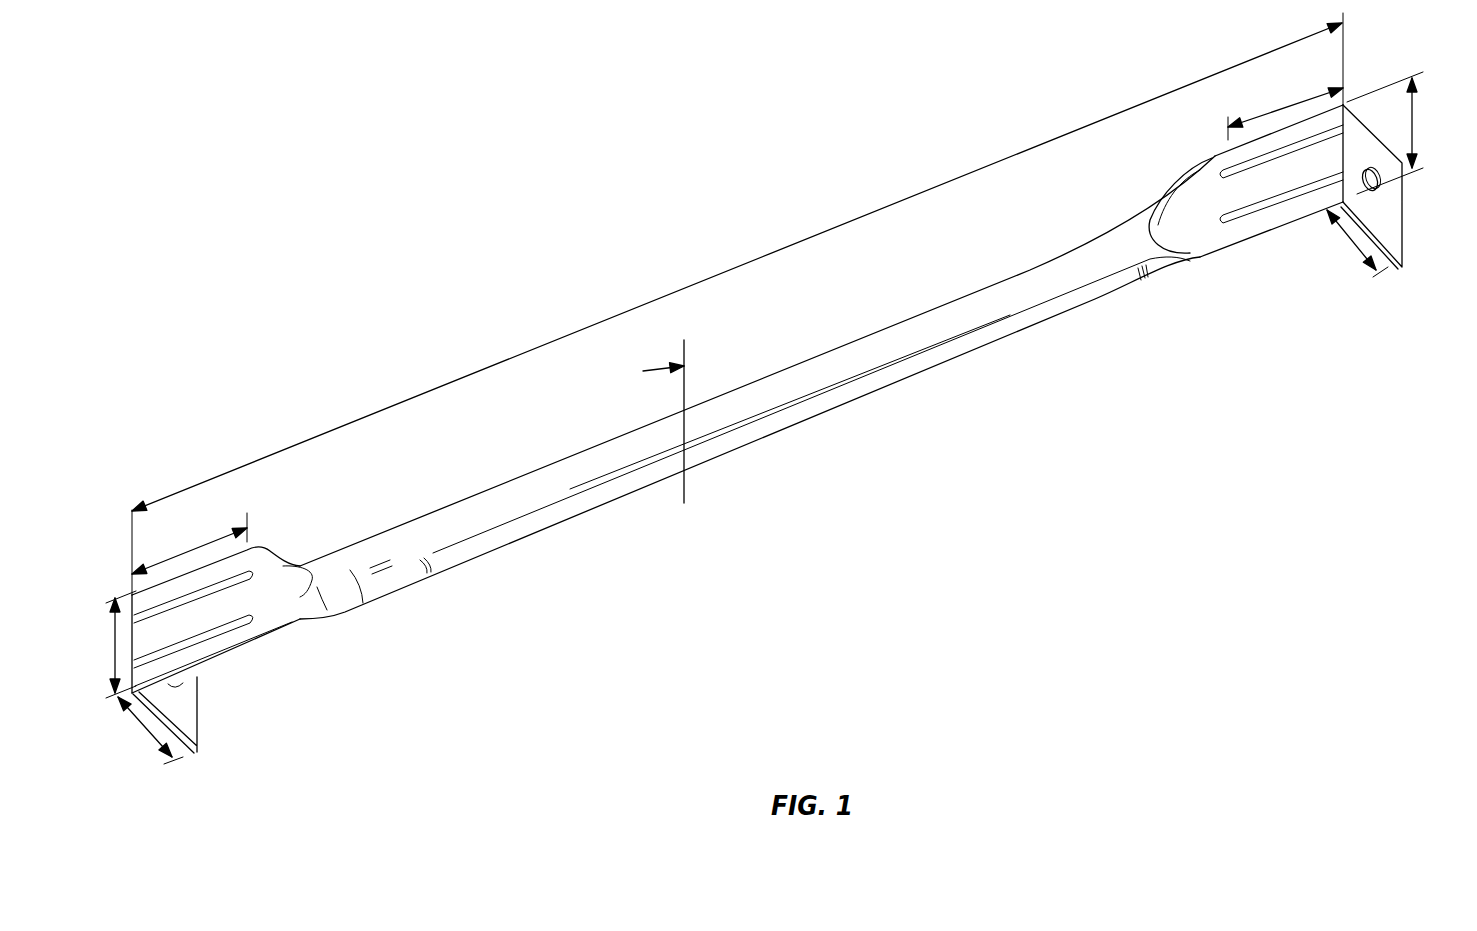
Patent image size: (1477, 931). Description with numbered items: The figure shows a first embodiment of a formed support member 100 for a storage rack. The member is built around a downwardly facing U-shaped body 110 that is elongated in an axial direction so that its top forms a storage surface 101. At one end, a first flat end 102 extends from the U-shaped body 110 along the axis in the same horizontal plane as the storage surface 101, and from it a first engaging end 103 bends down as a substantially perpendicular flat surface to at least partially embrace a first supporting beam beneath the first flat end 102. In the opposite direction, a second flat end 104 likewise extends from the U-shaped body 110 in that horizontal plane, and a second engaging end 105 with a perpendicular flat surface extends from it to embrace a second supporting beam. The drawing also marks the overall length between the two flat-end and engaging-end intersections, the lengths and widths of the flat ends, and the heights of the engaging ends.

The formed support member 100 is at (880, 130).
The storage surface 101 is at (767, 388).
The first flat end 102 is at (273, 580).
The first engaging end 103 is at (190, 720).
The second flat end 104 is at (1207, 177).
The second engaging end 105 is at (1390, 218).
The U-shaped body 110 is at (879, 405).